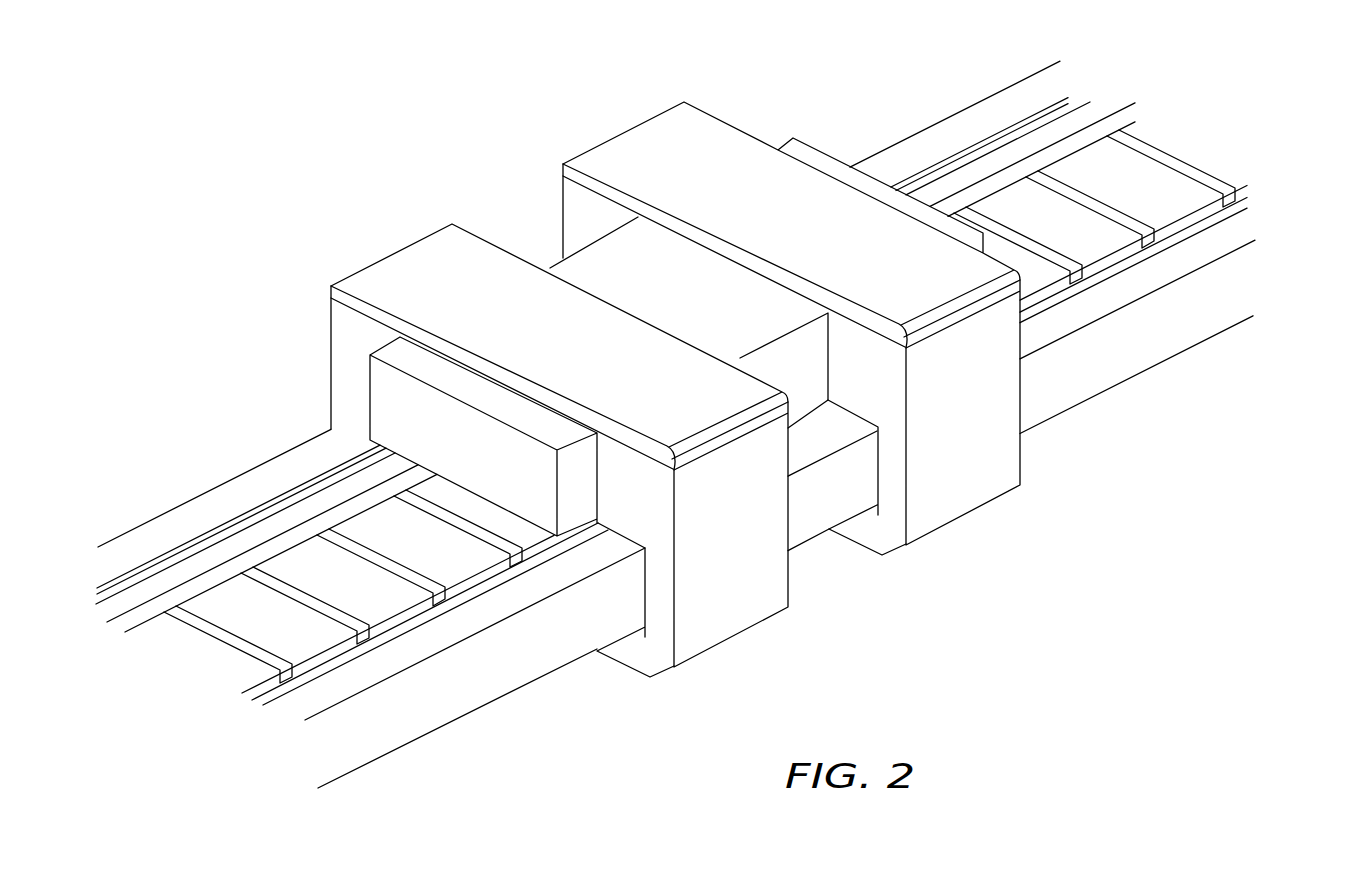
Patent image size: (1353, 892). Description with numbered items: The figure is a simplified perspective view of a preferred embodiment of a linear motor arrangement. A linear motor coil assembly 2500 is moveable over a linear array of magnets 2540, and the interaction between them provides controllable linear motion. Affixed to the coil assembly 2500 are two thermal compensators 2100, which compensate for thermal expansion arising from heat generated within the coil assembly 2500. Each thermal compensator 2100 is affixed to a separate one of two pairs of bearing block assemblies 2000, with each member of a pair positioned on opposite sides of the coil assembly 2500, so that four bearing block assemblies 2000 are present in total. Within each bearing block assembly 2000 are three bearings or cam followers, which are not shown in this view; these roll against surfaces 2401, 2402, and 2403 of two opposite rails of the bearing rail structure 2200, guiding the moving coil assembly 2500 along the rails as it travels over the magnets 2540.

The bearing block assembly 2000 is at (342, 365).
The thermal compensator 2100 is at (398, 268).
The bearing rail structure 2200 is at (460, 702).
The rail surface 2401 is at (1135, 285).
The rail surface 2402 is at (1080, 410).
The rail surface 2403 is at (1140, 345).
The linear motor coil assembly 2500 is at (668, 268).
The linear array of magnets 2540 is at (300, 560).